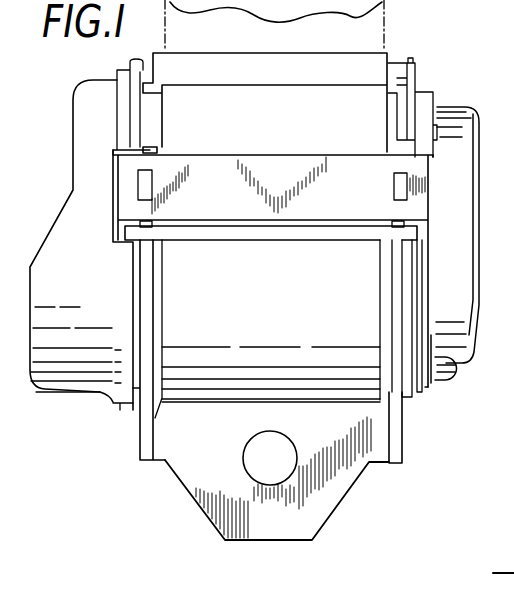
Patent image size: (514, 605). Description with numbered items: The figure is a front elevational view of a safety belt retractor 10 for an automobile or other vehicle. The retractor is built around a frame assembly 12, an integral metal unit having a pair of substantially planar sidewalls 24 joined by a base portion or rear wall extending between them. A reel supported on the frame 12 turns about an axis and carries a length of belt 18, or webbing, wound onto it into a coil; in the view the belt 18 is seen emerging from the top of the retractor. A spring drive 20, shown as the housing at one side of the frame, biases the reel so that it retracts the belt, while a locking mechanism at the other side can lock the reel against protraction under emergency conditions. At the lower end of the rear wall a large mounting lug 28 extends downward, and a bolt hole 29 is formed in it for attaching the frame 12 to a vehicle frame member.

The safety belt retractor 10 is at (452, 88).
The frame assembly 12 is at (377, 471).
The belt 18 is at (374, 30).
The spring drive 20 is at (85, 404).
The sidewalls 24 is at (140, 447).
The mounting lug 28 is at (277, 513).
The bolt hole 29 is at (257, 448).